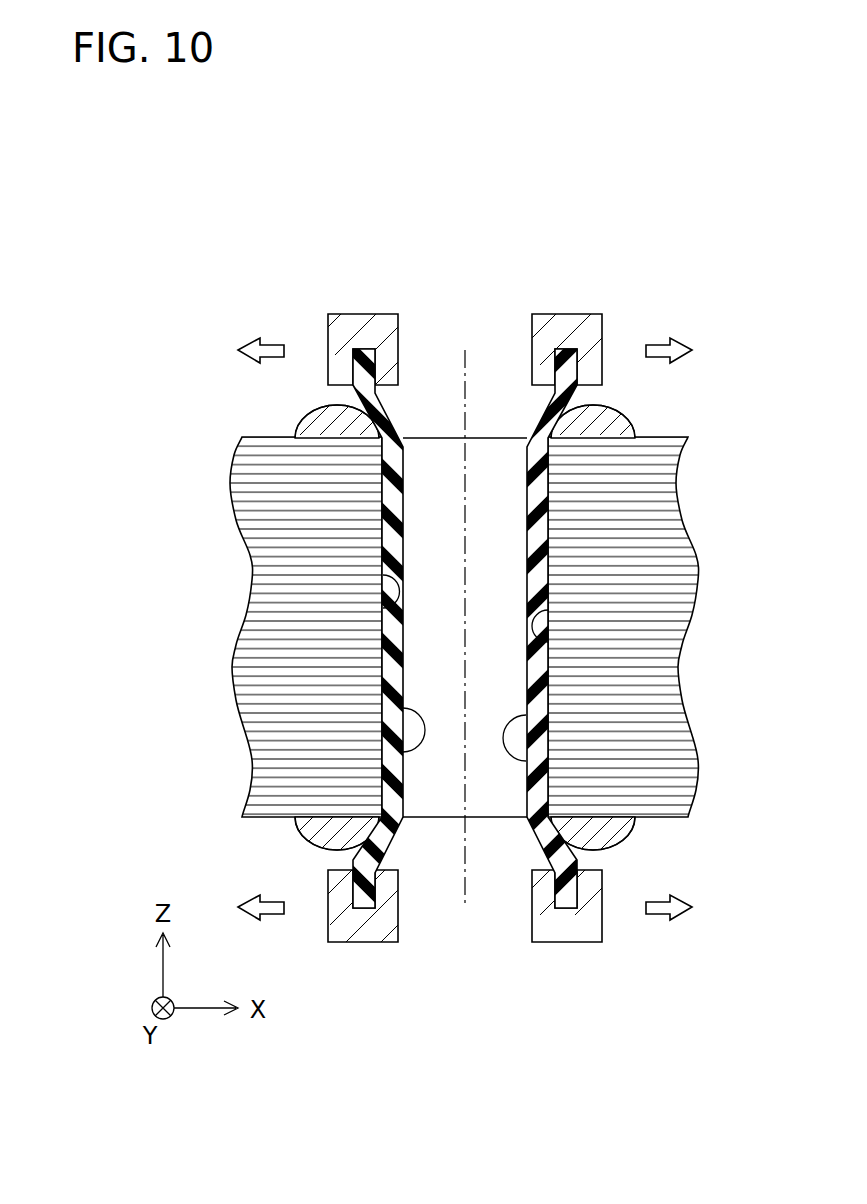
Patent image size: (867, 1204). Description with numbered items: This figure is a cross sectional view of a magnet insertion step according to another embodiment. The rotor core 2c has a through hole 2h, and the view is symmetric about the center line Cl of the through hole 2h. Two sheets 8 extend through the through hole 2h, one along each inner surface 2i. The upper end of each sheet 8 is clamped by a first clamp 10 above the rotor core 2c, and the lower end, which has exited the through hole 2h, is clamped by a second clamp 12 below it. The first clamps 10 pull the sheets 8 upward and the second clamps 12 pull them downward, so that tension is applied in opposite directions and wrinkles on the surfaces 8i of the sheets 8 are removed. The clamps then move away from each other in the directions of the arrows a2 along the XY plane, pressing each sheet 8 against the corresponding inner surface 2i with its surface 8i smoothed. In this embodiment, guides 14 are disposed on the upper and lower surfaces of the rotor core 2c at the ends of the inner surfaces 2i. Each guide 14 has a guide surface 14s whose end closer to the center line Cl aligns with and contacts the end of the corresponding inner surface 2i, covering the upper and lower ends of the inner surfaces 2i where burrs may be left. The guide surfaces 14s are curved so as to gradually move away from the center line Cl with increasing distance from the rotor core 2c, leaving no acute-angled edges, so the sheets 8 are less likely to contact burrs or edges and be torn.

The rotor core 2c is at (240, 488).
The through hole 2h is at (442, 450).
The inner surface 2i is at (390, 604).
The sheet 8 is at (387, 480).
The surface of sheet 8i is at (397, 750).
The first clamp 10 is at (347, 325).
The second clamp 12 is at (353, 930).
The guide 14 is at (315, 422).
The guide surface 14s is at (395, 400).
The arrow a2 is at (274, 348).
The center line Cl is at (465, 611).